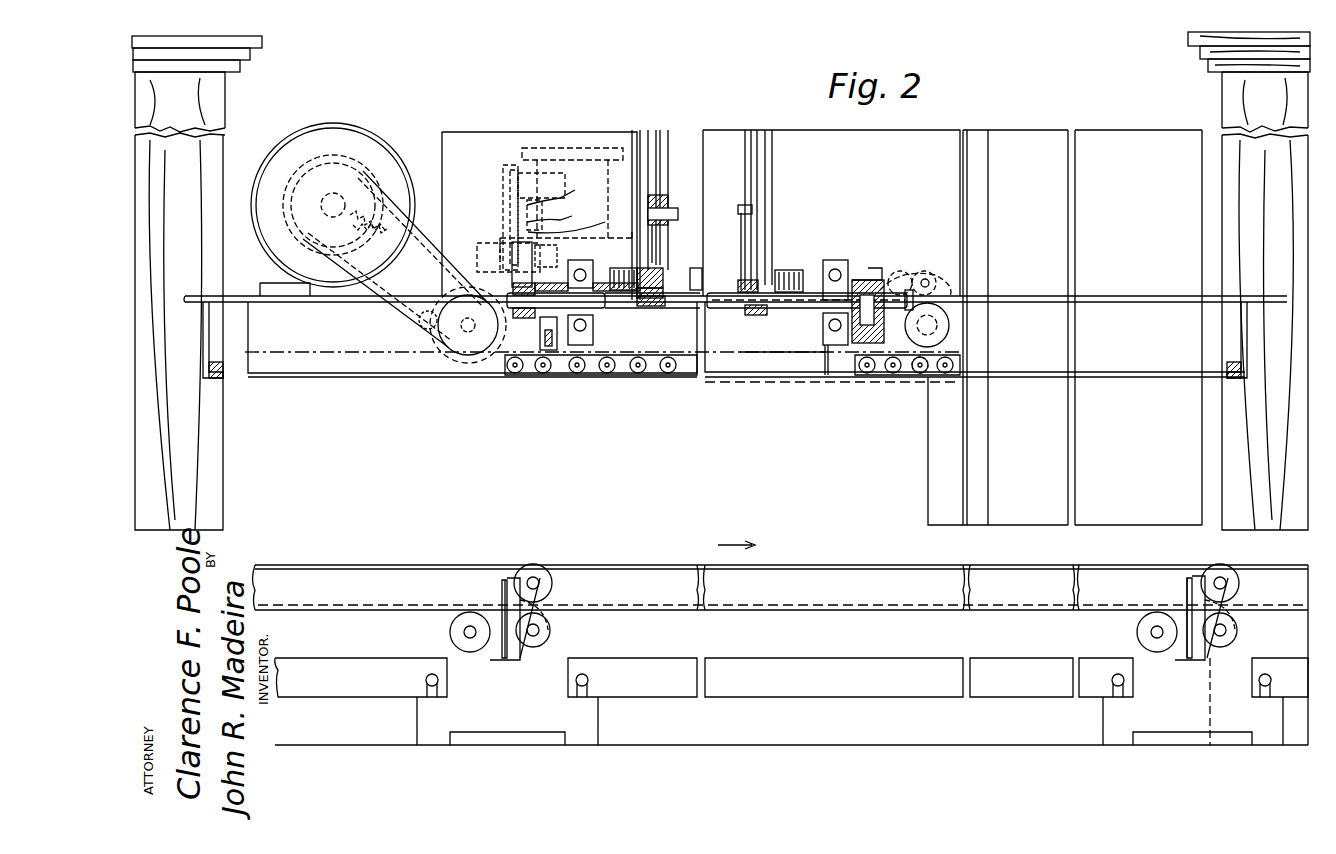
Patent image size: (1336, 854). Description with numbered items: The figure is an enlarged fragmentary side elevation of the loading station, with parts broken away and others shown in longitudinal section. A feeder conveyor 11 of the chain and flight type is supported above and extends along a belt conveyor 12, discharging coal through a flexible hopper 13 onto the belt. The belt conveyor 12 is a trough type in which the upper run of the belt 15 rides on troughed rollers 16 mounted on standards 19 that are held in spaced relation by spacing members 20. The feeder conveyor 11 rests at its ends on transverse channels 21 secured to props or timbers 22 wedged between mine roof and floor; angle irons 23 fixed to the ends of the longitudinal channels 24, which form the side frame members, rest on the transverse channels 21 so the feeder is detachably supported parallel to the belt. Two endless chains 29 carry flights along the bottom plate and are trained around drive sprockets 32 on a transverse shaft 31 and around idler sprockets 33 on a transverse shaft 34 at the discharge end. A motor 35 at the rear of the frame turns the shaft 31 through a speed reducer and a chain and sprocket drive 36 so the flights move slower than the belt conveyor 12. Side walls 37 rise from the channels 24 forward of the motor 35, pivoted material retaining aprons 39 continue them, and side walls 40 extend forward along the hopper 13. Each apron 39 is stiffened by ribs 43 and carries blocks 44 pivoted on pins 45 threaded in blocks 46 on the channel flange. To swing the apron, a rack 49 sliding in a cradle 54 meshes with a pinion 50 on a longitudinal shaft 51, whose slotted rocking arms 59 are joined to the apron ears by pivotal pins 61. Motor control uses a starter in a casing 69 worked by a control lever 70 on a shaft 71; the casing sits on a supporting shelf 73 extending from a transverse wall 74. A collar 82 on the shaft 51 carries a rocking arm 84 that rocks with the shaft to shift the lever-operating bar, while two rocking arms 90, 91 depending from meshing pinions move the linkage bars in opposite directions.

The feeder conveyor 11 is at (795, 378).
The belt conveyor 12 is at (384, 560).
The flexible hopper 13 is at (930, 470).
The belt 15 is at (795, 612).
The troughed rollers 16 is at (535, 565).
The standards 19 is at (415, 728).
The spacing members 20 is at (338, 690).
The transverse channels 21 is at (212, 372).
The props or timbers 22 is at (225, 108).
The angle irons 23 is at (232, 294).
The channels 24 is at (362, 378).
The endless chains 29 is at (905, 272).
The transverse shaft 31 is at (462, 338).
The drive sprockets 32 is at (500, 352).
The idler sprockets 33 is at (898, 380).
The transverse shaft 34 is at (924, 340).
The motor 35 is at (382, 135).
The chain and sprocket drive 36 is at (380, 200).
The side walls 37 is at (490, 132).
The pivoted material retaining aprons 39 is at (727, 136).
The side walls 40 is at (1106, 130).
The stiffening ribs 43 is at (650, 130).
The blocks 44 is at (672, 250).
The pins 45 is at (652, 304).
The blocks 46 is at (612, 292).
The rack 49 is at (890, 360).
The pinion 50 is at (875, 268).
The longitudinal shaft 51 is at (590, 308).
The U-frame or cradle 54 is at (858, 372).
The slotted rocking arms 59 is at (757, 247).
The pivotal pins 61 is at (678, 208).
The casing 69 is at (566, 148).
The control lever 70 is at (555, 215).
The shaft 71 is at (557, 190).
The supporting shelf 73 is at (602, 235).
The transverse wall 74 is at (632, 135).
The collar 82 is at (540, 350).
The rocking arm 84 is at (530, 270).
The rocking arm 90 is at (503, 208).
The rocking arm 91 is at (634, 234).